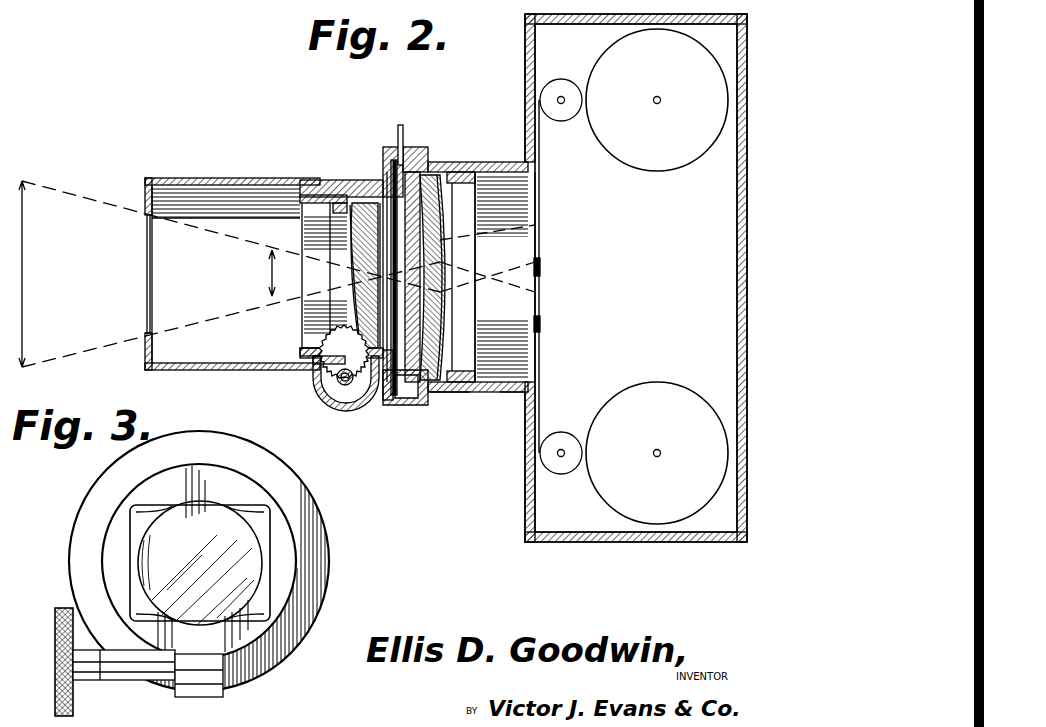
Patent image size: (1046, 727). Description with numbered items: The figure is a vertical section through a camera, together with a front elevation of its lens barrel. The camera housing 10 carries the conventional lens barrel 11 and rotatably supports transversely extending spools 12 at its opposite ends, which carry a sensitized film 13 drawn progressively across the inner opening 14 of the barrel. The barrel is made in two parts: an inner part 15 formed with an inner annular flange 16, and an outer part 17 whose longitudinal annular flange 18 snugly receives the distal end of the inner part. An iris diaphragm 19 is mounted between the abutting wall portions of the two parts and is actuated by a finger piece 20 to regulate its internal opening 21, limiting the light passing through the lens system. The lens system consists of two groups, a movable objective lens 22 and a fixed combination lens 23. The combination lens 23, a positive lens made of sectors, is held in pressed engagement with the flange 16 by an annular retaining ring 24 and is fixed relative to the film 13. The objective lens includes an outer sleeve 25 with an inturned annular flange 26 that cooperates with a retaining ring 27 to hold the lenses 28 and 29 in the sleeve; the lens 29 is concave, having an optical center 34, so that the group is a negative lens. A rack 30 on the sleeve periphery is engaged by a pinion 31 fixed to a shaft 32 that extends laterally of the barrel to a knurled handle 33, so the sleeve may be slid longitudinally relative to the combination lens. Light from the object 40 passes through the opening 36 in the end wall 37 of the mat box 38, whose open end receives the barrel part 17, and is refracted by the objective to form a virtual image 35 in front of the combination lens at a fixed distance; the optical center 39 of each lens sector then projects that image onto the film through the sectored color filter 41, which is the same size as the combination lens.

In FIG. 2, the camera housing 10 is at (525, 75).
In FIG. 2, the lens barrel 11 is at (454, 152).
In FIG. 3, the lens barrel 11 is at (322, 504).
In FIG. 2, the spools 12 is at (657, 160).
In FIG. 2, the film 13 is at (541, 338).
In FIG. 2, the inner opening 14 is at (510, 392).
In FIG. 2, the inner part 15 is at (450, 393).
In FIG. 2, the inner annular flange 16 is at (408, 406).
In FIG. 2, the outer part 17 is at (345, 180).
In FIG. 2, the longitudinal annular flange 18 is at (416, 148).
In FIG. 2, the iris diaphragm 19 is at (385, 150).
In FIG. 2, the finger piece 20 is at (397, 128).
In FIG. 2, the internal opening 21 is at (386, 400).
In FIG. 2, the lens group (objective lens) 22 is at (302, 351).
In FIG. 3, the lens group (objective lens) 22 is at (256, 508).
In FIG. 2, the lens group (combination lens) 23 is at (446, 350).
In FIG. 2, the annular retaining ring 24 is at (462, 334).
In FIG. 2, the outer sleeve 25 is at (302, 329).
In FIG. 2, the inturned annular flange 26 is at (392, 198).
In FIG. 2, the retaining ring 27 is at (334, 250).
In FIG. 3, the retaining ring 27 is at (140, 525).
In FIG. 2, the lens 28 is at (362, 268).
In FIG. 2, the lens 29 is at (356, 313).
In FIG. 3, the lens 29 is at (172, 568).
In FIG. 2, the rack 30 is at (322, 378).
In FIG. 2, the pinion 31 is at (340, 403).
In FIG. 2, the shaft 32 is at (338, 383).
In FIG. 3, the knurled handle 33 is at (55, 658).
In FIG. 2, the optical center 34 is at (380, 280).
In FIG. 2, the virtual image 35 is at (270, 272).
In FIG. 2, the opening 36 is at (146, 271).
In FIG. 2, the end wall 37 is at (146, 350).
In FIG. 2, the mat box 38 is at (235, 178).
In FIG. 3, the mat box 38 is at (137, 488).
In FIG. 2, the optical center 39 is at (455, 262).
In FIG. 2, the object 40 is at (24, 263).
In FIG. 2, the filter 41 is at (456, 238).